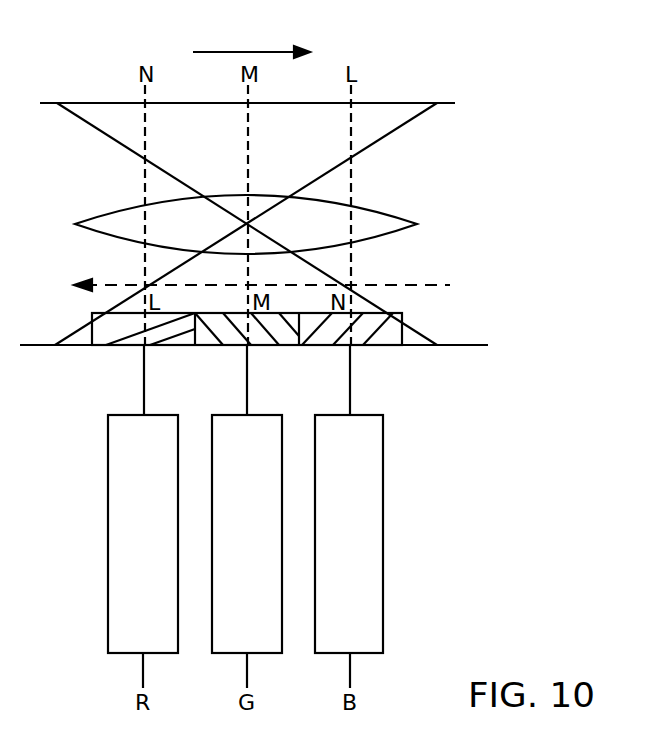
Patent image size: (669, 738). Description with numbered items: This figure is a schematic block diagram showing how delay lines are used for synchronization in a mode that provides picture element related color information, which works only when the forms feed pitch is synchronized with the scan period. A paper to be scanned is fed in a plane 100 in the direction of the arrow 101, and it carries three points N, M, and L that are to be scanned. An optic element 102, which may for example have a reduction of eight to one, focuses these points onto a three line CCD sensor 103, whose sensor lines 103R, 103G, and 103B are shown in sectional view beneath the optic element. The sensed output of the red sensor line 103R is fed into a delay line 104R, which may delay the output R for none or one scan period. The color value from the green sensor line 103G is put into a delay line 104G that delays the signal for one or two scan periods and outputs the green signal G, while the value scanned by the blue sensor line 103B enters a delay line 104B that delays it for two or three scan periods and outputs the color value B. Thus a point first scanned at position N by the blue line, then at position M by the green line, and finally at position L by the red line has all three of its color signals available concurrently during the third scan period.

The plane 100 is at (448, 103).
The arrow 101 is at (246, 50).
The optic element 102 is at (370, 221).
The three line CCD sensor 103 is at (289, 340).
The sensor line 103R is at (162, 336).
The sensor line 103G is at (268, 336).
The sensor line 103B is at (366, 335).
The delay line 104R is at (172, 463).
The delay line 104G is at (276, 463).
The delay line 104B is at (377, 463).